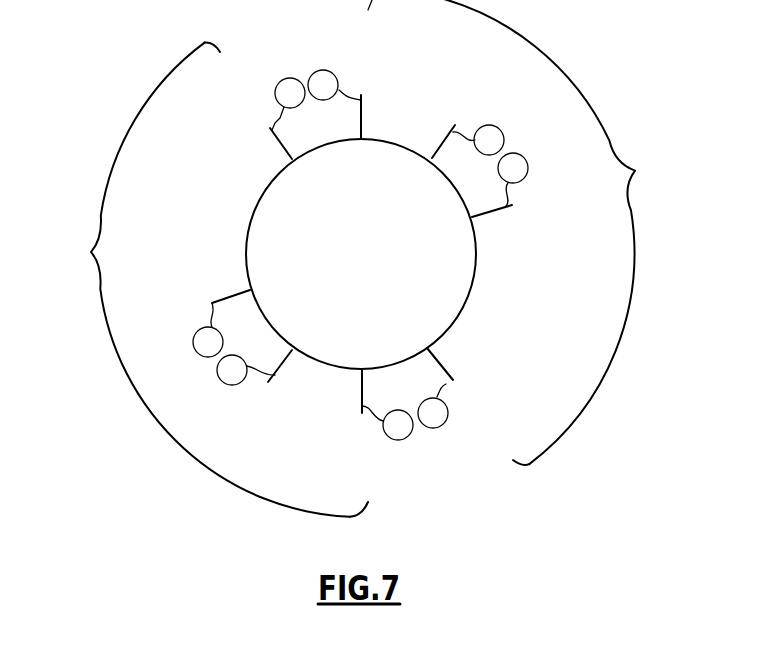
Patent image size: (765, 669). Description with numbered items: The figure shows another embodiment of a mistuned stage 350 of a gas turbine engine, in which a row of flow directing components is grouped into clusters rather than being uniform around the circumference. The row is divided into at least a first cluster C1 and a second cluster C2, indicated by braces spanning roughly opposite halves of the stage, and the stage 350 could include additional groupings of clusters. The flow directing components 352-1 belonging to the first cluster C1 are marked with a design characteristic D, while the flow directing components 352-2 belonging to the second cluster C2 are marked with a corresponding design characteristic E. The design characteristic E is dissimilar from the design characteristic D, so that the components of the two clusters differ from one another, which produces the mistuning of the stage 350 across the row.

The stage 350 is at (361, 186).
The flow directing components of the first cluster 352-1 is at (264, 146).
The flow directing components of the second cluster 352-2 is at (377, 113).
The first cluster C1 is at (91, 252).
The second cluster C2 is at (635, 170).
The design characteristic D is at (303, 259).
The design characteristic E is at (418, 249).